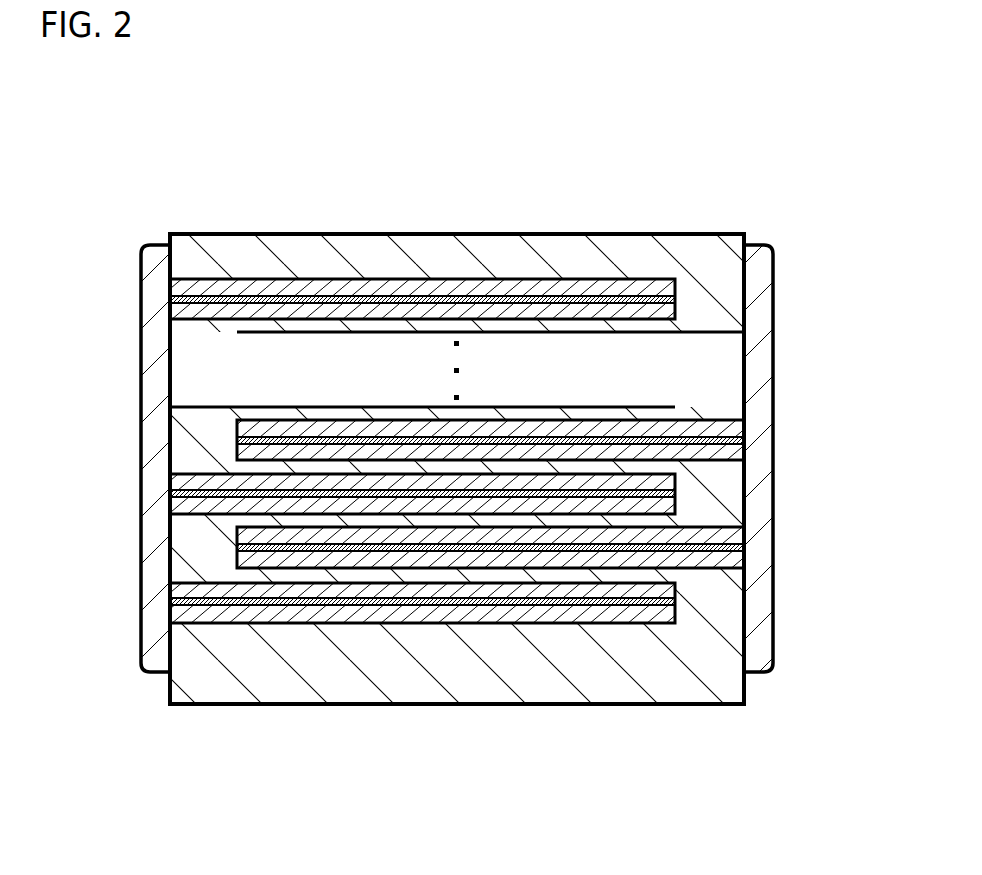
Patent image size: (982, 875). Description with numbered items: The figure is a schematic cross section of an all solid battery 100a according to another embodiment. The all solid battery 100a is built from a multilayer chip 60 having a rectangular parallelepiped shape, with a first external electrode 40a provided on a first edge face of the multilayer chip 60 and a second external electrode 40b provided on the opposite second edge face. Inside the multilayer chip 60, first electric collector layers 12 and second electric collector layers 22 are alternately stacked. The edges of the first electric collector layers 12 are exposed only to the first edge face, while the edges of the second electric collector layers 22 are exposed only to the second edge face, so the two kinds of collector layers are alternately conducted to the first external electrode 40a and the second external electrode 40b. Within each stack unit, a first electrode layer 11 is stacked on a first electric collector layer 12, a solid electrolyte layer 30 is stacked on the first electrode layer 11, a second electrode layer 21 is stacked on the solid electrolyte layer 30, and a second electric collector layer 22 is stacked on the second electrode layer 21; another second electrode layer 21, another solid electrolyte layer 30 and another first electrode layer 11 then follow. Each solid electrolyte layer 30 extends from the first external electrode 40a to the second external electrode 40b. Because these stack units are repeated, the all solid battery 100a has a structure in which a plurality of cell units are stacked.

The all solid battery 100a is at (881, 104).
The multilayer chip 60 is at (570, 221).
The first external electrode 40a is at (140, 310).
The second external electrode 40b is at (775, 310).
The first electrode layer 11 is at (182, 481).
The first electric collector layer 12 is at (175, 492).
The second electrode layer 21 is at (740, 530).
The second electric collector layer 22 is at (735, 547).
The solid electrolyte layer 30 is at (347, 577).